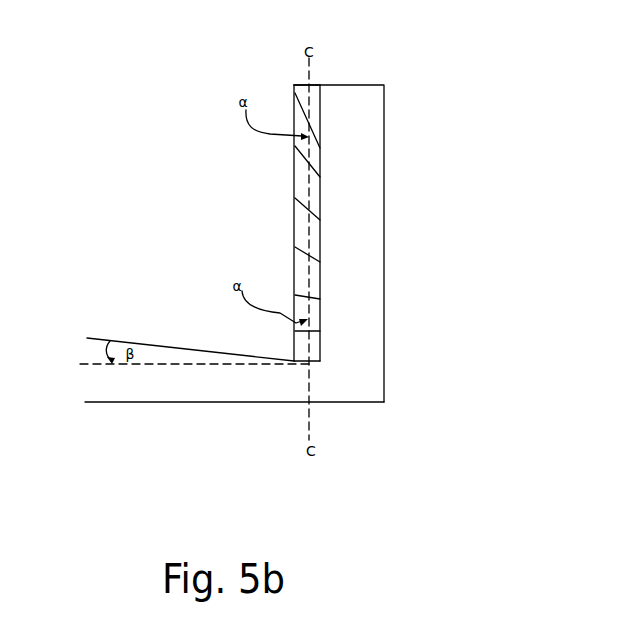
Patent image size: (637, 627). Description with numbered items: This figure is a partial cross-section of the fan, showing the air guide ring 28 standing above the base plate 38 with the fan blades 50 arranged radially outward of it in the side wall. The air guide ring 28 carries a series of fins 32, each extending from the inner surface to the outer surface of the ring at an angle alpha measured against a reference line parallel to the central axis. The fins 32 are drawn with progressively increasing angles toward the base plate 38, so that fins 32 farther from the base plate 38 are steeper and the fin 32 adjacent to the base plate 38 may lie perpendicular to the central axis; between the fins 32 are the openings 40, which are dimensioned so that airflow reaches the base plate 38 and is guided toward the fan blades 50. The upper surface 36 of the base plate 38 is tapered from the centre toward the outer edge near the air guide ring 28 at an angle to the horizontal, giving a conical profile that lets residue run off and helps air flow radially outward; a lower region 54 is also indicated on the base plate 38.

The air guide ring 28 is at (322, 345).
The fin 32 is at (311, 133).
The upper surface 36 is at (195, 349).
The base plate 38 is at (124, 382).
The openings 40 is at (298, 181).
The fan blades 50 is at (358, 202).
The bottom surface 54 is at (207, 403).